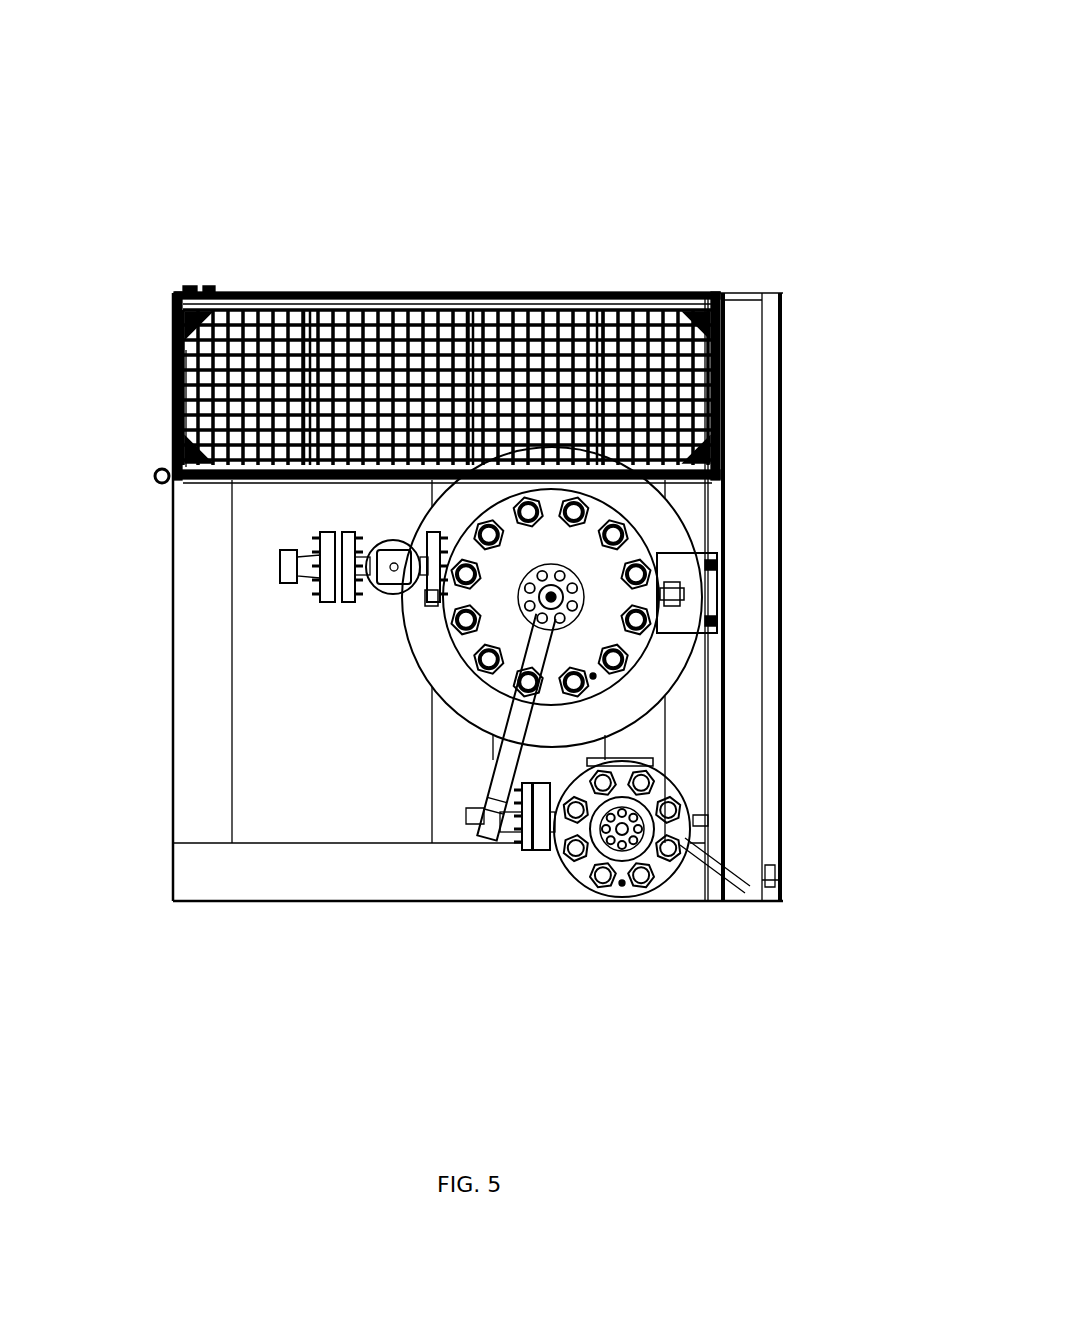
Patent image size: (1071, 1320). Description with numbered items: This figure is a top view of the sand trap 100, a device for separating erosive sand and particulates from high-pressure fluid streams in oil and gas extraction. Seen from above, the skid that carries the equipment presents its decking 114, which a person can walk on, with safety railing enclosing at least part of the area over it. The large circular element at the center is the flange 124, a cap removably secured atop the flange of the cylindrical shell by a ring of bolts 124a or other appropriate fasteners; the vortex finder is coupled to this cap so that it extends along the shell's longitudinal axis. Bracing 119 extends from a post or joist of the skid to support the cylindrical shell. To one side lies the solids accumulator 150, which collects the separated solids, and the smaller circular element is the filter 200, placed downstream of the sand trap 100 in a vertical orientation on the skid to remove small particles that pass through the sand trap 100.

The sand trap 100 is at (352, 166).
The decking 114 is at (245, 345).
The bracing 119 is at (698, 583).
The flange 124 is at (505, 617).
The bolts 124a is at (620, 537).
The solids accumulator 150 is at (380, 623).
The filter 200 is at (563, 883).